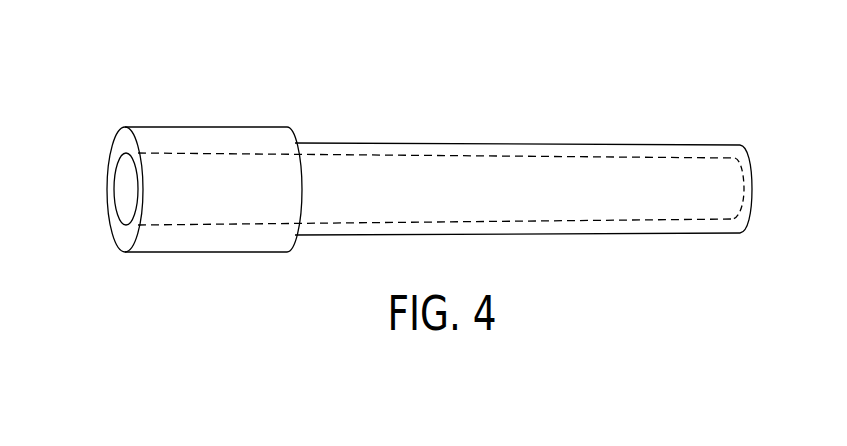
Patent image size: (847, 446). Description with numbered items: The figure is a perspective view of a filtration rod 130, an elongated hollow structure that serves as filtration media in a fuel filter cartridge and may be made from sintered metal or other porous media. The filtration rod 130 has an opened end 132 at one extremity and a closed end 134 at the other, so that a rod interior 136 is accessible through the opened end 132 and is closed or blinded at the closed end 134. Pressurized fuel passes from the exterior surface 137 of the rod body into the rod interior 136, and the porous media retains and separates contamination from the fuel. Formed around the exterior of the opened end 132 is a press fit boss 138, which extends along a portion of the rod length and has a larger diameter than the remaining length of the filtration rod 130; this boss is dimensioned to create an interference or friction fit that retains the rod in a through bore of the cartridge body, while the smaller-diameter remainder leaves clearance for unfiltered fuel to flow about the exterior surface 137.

The filtration rod 130 is at (510, 78).
The opened end 132 is at (110, 153).
The closed end 134 is at (750, 170).
The rod interior 136 is at (112, 203).
The exterior surface 137 is at (408, 143).
The press fit boss 138 is at (202, 142).